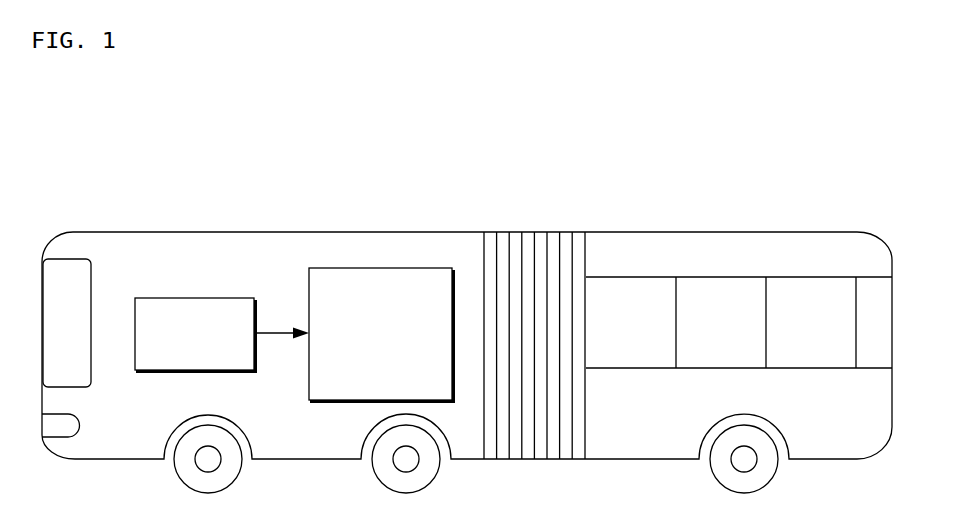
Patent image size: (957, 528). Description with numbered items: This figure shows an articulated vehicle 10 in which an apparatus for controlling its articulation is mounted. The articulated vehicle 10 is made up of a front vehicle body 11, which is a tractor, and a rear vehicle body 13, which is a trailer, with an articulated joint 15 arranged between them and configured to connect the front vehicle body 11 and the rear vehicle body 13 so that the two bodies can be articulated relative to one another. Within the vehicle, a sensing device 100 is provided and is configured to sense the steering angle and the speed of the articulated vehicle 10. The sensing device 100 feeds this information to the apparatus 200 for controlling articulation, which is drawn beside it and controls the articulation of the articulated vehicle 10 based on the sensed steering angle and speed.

The articulated vehicle 10 is at (628, 153).
The front vehicle body 11 is at (440, 232).
The rear vehicle body 13 is at (622, 232).
The articulated joint 15 is at (528, 232).
The sensing device 100 is at (204, 298).
The apparatus for controlling articulation 200 is at (400, 268).